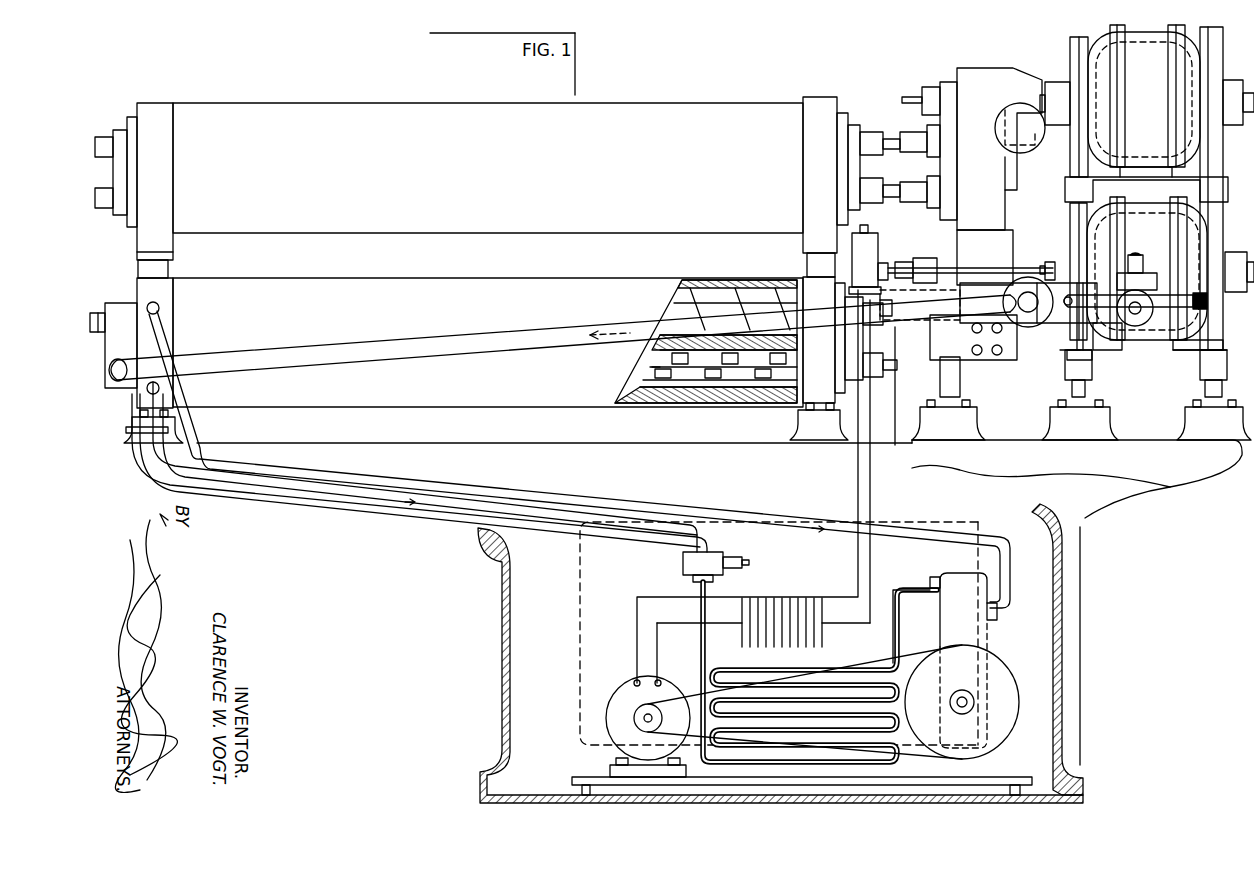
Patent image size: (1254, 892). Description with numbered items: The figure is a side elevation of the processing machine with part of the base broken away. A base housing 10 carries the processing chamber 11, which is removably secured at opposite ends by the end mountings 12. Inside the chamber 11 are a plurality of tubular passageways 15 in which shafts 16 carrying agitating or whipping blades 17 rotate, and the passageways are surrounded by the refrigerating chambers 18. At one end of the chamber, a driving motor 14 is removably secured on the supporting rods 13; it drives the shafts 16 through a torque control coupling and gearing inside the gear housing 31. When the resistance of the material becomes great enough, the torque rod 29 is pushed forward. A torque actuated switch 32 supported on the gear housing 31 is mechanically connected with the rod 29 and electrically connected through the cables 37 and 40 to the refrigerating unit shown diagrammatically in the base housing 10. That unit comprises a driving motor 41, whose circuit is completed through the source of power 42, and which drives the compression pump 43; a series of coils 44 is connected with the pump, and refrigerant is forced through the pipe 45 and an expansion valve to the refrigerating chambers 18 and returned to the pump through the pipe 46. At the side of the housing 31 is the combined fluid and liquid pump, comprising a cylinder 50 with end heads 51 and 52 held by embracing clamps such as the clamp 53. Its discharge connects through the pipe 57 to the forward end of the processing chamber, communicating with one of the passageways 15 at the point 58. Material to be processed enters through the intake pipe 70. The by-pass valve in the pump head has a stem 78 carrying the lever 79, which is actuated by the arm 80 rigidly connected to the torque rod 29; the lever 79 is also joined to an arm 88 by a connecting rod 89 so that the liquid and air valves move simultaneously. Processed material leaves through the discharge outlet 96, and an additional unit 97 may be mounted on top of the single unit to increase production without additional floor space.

The base housing 10 is at (500, 563).
The processing chamber 11 is at (263, 397).
The end mountings 12 is at (138, 400).
The supporting rods 13 is at (1087, 390).
The driving motor 14 is at (1150, 340).
The tubular passageways 15 is at (643, 380).
The shafts 16 is at (658, 367).
The agitating or whipping blades 17 is at (687, 383).
The refrigerating chambers 18 is at (733, 385).
The torque rod 29 is at (930, 247).
The gear housing 31 is at (1003, 247).
The torque actuated switch 32 is at (850, 262).
The cable 37 is at (637, 636).
The cable 40 is at (657, 657).
The driving motor 41 is at (620, 705).
The source of power 42 is at (815, 637).
The compression pump 43 is at (988, 641).
The coils 44 is at (917, 582).
The pipe 45 is at (323, 492).
The pipe 46 is at (497, 484).
The cylinder 50 is at (1050, 323).
The end head 51 is at (1103, 327).
The end head 52 is at (1000, 266).
The embracing clamp 53 is at (1148, 330).
The pipe 57 is at (410, 343).
The connection to processing passageway 58 is at (110, 388).
The intake pipe 70 is at (1136, 253).
The valve stem 78 is at (1058, 256).
The lever 79 is at (1056, 268).
The arm 80 is at (912, 322).
The arm 88 is at (950, 250).
The connecting rod 89 is at (1027, 253).
The discharge outlet 96 is at (98, 312).
The additional unit 97 is at (363, 113).